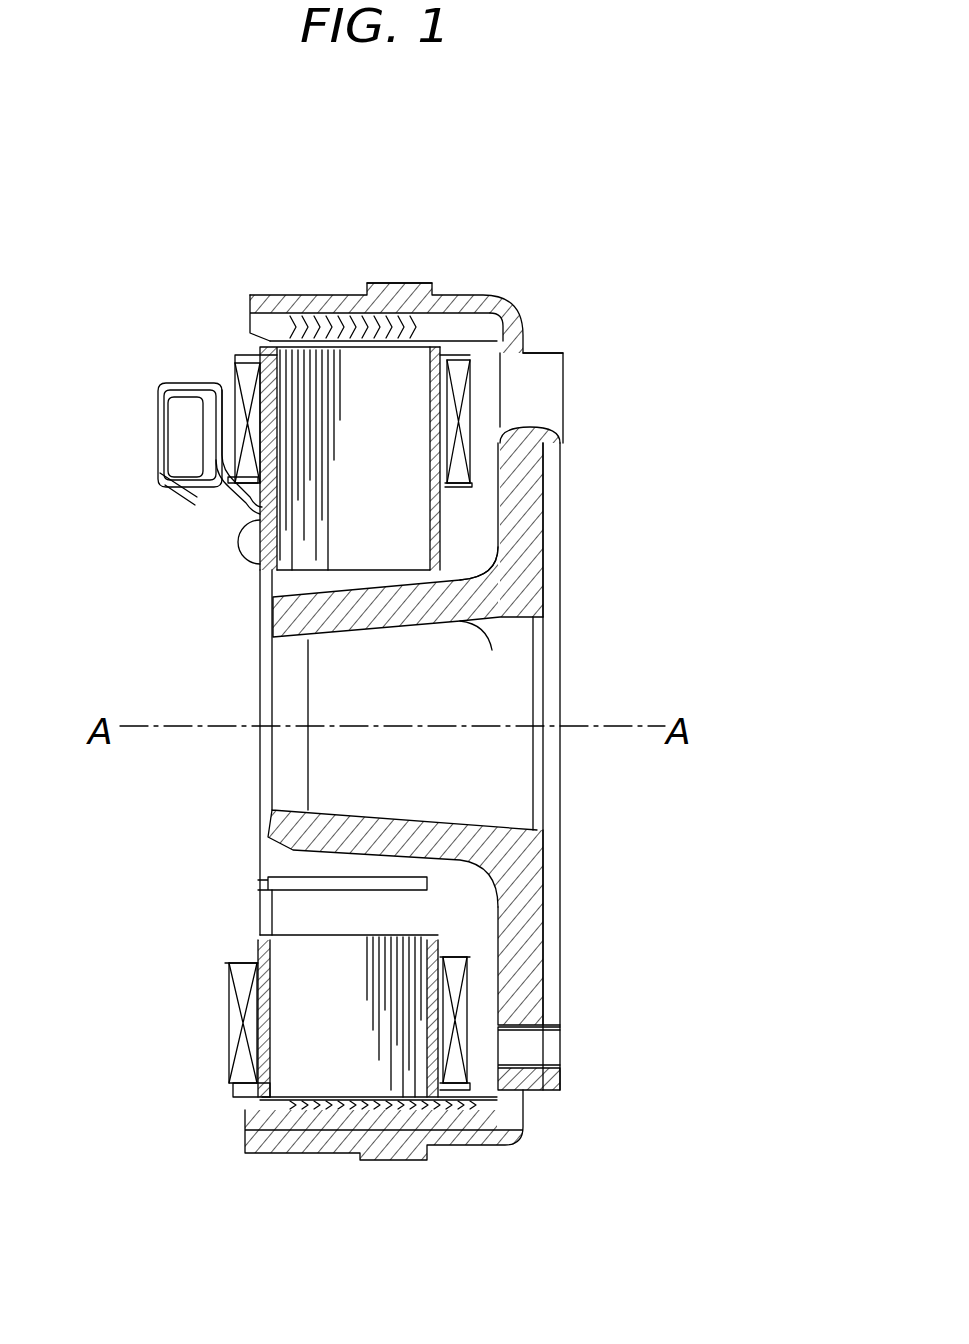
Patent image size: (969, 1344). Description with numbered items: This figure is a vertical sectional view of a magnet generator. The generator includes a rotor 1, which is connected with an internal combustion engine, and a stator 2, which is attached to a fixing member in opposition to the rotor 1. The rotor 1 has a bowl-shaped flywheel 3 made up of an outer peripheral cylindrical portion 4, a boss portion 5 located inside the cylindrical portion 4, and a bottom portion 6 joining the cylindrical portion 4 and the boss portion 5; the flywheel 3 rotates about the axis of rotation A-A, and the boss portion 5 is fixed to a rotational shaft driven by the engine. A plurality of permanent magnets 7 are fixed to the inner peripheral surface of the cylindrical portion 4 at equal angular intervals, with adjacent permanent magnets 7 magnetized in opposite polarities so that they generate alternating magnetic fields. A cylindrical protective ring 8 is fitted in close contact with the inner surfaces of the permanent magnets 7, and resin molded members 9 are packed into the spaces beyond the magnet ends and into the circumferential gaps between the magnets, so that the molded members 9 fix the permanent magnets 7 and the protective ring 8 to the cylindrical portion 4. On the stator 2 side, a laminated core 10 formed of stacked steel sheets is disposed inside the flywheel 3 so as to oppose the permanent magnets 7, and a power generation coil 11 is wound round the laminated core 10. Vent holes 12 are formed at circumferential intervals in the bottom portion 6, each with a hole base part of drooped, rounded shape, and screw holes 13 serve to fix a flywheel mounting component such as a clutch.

The rotor 1 is at (566, 548).
The stator 2 is at (250, 948).
The flywheel 3 is at (533, 885).
The cylindrical portion 4 is at (327, 300).
The boss portion 5 is at (455, 625).
The bottom portion 6 is at (528, 488).
The permanent magnets 7 is at (388, 300).
The protective ring 8 is at (440, 313).
The molded members 9 is at (277, 322).
The laminated core 10 is at (287, 1057).
The power generation coil 11 is at (232, 1010).
The vent holes 12 is at (530, 378).
The screw holes 13 is at (548, 1040).